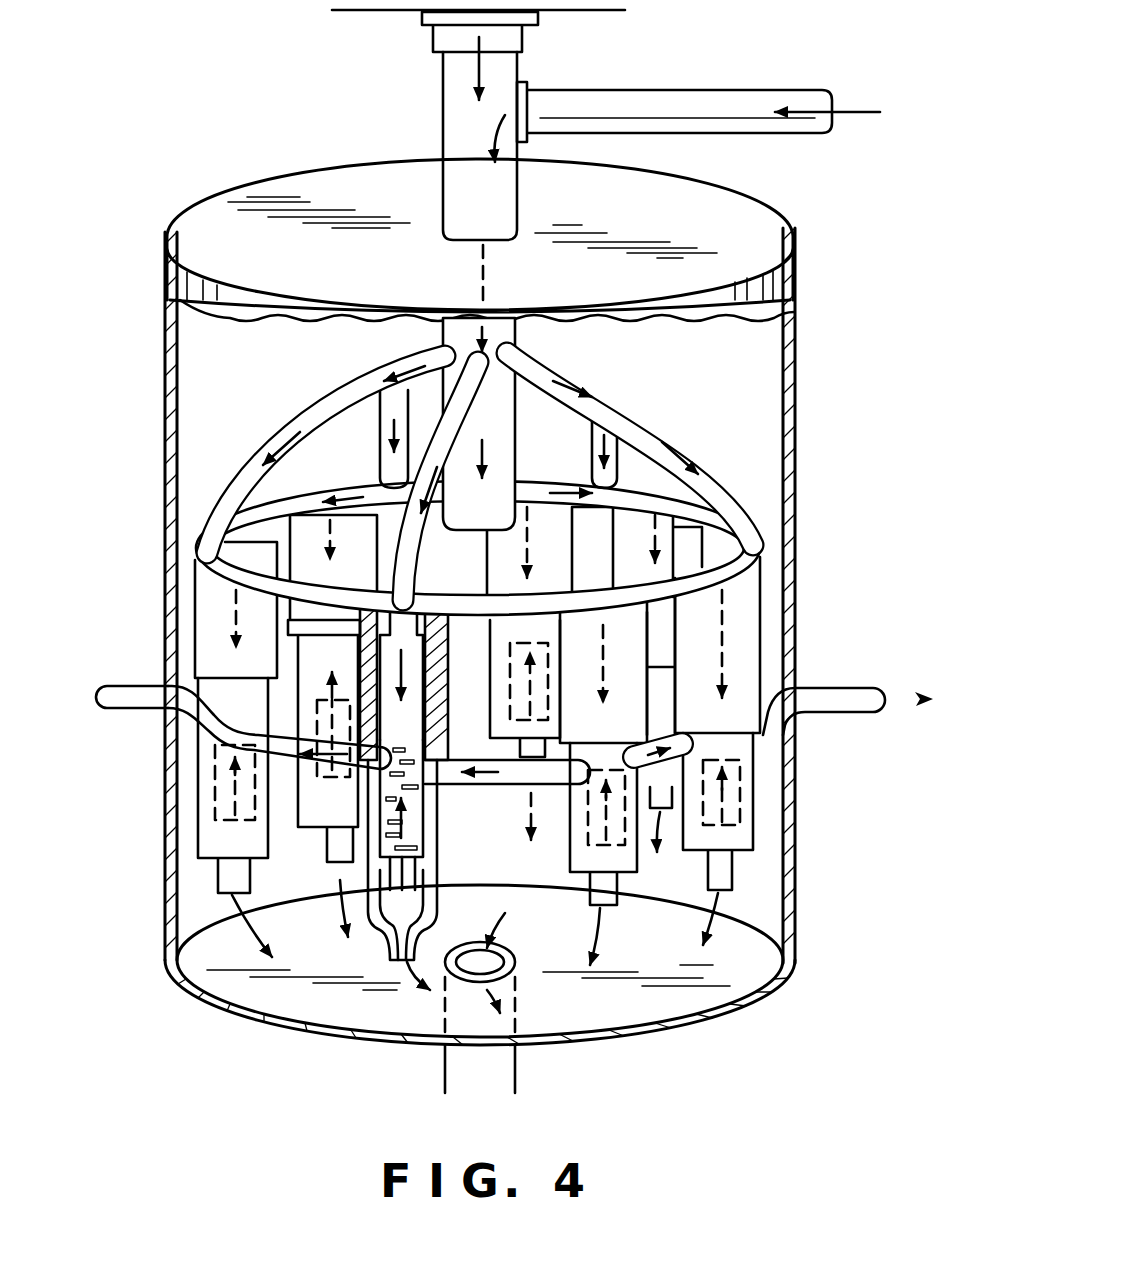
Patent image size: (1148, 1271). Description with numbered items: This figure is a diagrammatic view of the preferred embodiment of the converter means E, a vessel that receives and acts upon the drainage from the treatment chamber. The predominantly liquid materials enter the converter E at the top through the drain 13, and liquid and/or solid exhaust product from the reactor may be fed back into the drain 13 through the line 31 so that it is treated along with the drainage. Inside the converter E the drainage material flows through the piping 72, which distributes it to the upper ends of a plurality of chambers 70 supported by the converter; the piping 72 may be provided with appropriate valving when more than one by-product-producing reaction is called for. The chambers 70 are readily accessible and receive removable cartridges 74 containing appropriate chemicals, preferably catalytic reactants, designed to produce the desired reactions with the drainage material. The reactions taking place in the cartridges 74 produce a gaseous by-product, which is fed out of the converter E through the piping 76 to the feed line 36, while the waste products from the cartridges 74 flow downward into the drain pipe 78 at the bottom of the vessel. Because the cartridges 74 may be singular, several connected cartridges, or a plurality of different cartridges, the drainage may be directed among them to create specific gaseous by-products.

The drain 13 is at (455, 115).
The line 31 is at (693, 96).
The converter means E is at (806, 455).
The chambers 70 is at (212, 620).
The piping 72 is at (330, 398).
The removable cartridges 74 is at (210, 808).
The piping 76 is at (125, 690).
The feed line 36 is at (83, 750).
The drain pipe 78 is at (518, 1086).